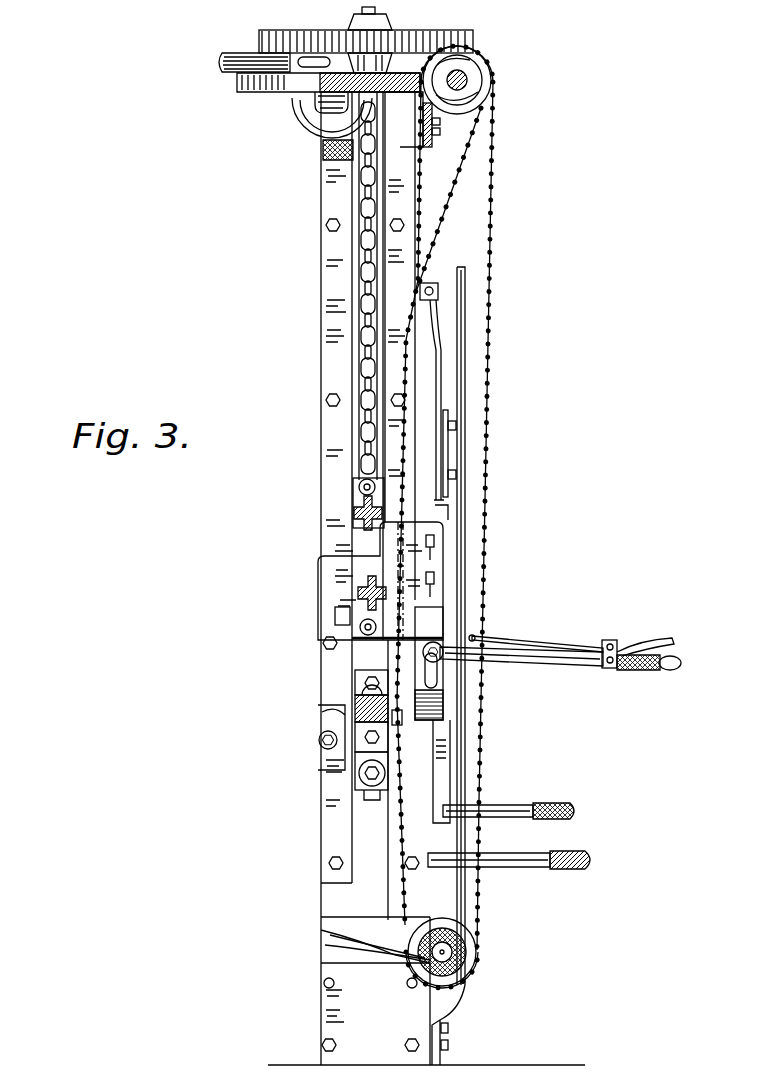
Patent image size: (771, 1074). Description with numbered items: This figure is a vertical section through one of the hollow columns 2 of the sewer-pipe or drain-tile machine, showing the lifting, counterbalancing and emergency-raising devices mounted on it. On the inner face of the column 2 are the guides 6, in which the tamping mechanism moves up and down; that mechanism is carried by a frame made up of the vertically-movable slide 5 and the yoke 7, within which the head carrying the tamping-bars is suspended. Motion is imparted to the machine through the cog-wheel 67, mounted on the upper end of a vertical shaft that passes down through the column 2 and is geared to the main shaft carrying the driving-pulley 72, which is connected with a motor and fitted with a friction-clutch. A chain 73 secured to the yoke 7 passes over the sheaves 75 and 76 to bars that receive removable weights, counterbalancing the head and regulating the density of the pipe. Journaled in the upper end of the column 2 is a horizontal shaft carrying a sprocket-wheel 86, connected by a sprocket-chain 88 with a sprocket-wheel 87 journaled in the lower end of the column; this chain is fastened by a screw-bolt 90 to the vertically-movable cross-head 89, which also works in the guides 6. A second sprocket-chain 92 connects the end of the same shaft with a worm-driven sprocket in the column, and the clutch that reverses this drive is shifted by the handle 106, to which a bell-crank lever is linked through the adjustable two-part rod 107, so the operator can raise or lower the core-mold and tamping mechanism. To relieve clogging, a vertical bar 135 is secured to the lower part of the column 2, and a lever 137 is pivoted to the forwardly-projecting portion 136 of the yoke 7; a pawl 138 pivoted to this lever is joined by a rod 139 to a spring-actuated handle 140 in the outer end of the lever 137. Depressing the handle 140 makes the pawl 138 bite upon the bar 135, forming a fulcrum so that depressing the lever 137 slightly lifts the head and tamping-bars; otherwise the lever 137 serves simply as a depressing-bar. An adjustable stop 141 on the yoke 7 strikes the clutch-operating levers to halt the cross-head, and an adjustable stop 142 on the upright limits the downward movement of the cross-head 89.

The column 2 is at (426, 578).
The vertically-movable slide 5 is at (325, 582).
The guide 6 is at (340, 340).
The yoke 7 is at (355, 537).
The cog-wheel 67 is at (433, 31).
The driving-pulley 72 is at (512, 858).
The chain 73 is at (363, 288).
The sheave 75 is at (305, 108).
The sheave 76 is at (219, 66).
The sprocket-wheel 86 is at (472, 90).
The sprocket-wheel 87 is at (442, 965).
The sprocket-chain 88 is at (461, 517).
The cross-head 89 is at (362, 702).
The screw-bolt 90 is at (403, 722).
The sprocket-chain 92 is at (448, 200).
The handle 106 is at (522, 800).
The two-part rod 107 is at (443, 513).
The vertical bar 135 is at (464, 440).
The forwardly-projecting portion 136 is at (440, 570).
The lever 137 is at (513, 667).
The pawl 138 is at (488, 634).
The rod 139 is at (590, 643).
The spring-actuated handle 140 is at (649, 642).
The adjustable stop 141 is at (440, 690).
The adjustable stop 142 is at (358, 783).